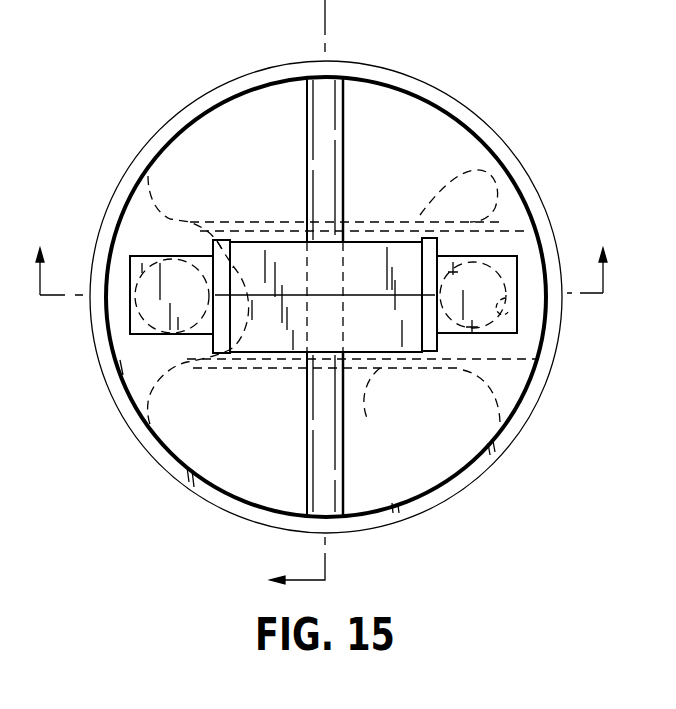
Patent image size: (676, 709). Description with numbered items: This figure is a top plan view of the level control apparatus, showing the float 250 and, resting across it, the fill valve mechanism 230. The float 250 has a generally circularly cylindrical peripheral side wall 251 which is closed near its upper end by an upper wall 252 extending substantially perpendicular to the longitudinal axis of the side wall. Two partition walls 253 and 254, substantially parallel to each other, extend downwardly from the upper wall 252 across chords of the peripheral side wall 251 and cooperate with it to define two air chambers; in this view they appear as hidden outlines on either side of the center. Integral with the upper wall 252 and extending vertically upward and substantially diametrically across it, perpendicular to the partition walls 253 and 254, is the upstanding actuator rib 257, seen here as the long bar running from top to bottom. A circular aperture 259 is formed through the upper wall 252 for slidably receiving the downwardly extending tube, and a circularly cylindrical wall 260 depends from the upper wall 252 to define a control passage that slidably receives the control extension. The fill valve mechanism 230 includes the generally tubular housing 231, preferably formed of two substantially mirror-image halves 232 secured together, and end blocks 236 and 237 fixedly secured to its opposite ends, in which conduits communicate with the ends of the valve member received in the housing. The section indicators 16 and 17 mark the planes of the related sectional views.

The fill valve mechanism 230 is at (523, 57).
The tubular housing 231 is at (278, 360).
The mirror-image halves 232 is at (368, 320).
The end block 236 is at (130, 335).
The end block 237 is at (517, 333).
The float 250 is at (104, 453).
The peripheral side wall 251 is at (488, 136).
The upper wall 252 is at (204, 210).
The partition wall 253 is at (455, 186).
The partition wall 254 is at (432, 396).
The actuator rib 257 is at (307, 446).
The circular aperture 259 is at (505, 298).
The cylindrical wall 260 is at (178, 368).
The section line 16 is at (330, 252).
The section line 17 is at (282, 299).